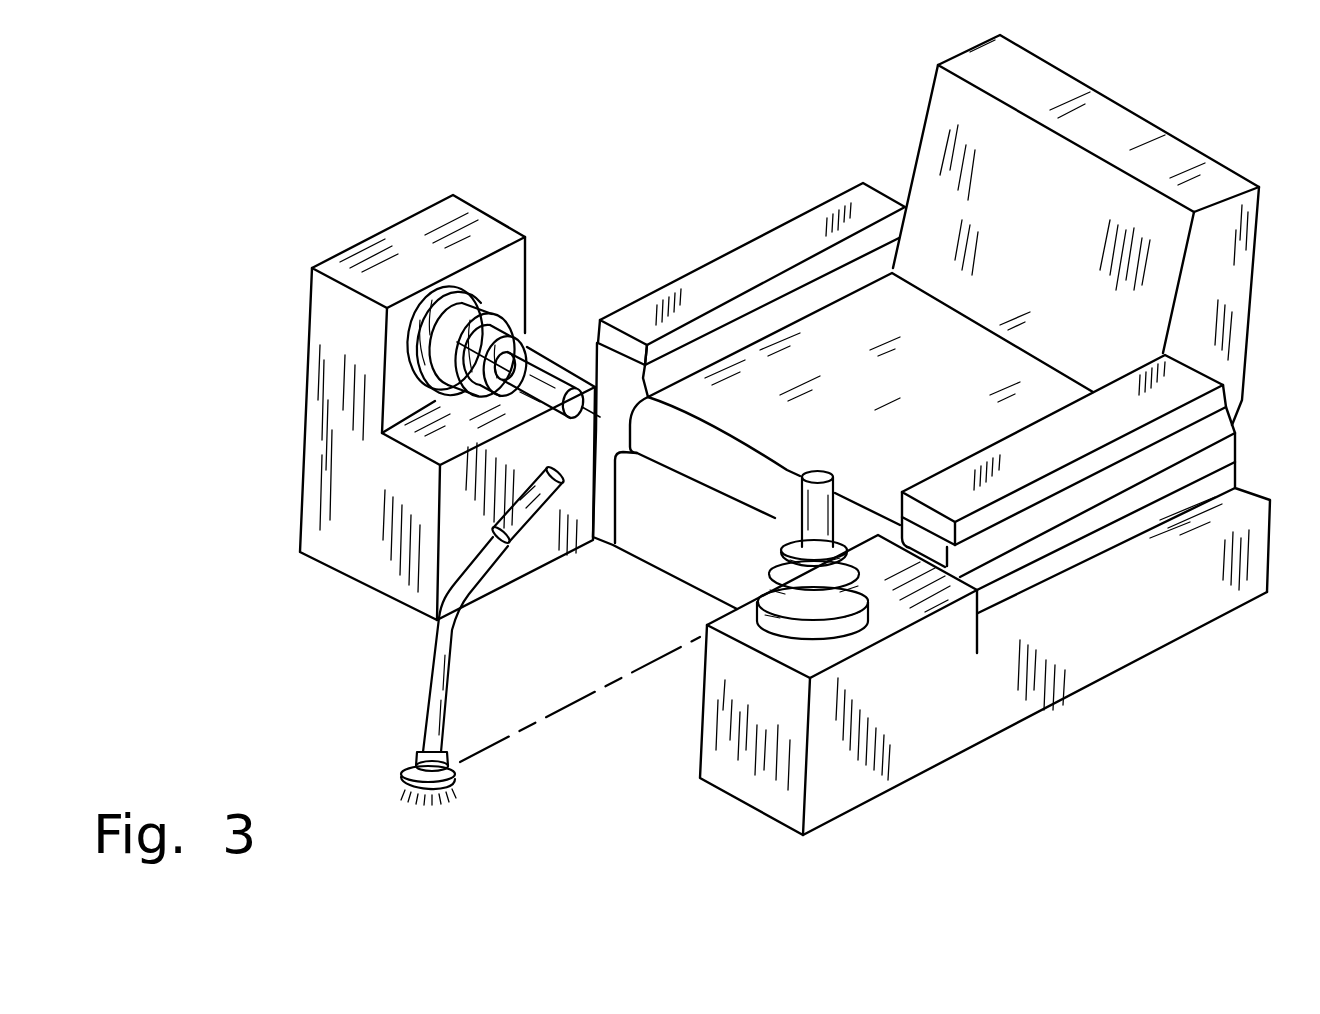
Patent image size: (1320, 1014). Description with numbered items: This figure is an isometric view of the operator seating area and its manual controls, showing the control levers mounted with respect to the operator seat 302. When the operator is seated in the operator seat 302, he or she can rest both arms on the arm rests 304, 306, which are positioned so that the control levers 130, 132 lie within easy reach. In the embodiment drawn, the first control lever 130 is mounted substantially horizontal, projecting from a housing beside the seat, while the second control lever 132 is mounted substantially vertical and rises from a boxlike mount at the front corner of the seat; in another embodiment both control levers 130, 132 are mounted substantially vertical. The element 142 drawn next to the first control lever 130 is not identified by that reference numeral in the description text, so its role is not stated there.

The first control lever 130 is at (538, 354).
The hose with nozzle and brush 142 is at (576, 410).
The second control lever 132 is at (801, 491).
The operator seat 302 is at (1112, 120).
The arm rest 304 is at (923, 490).
The arm rest 306 is at (738, 262).